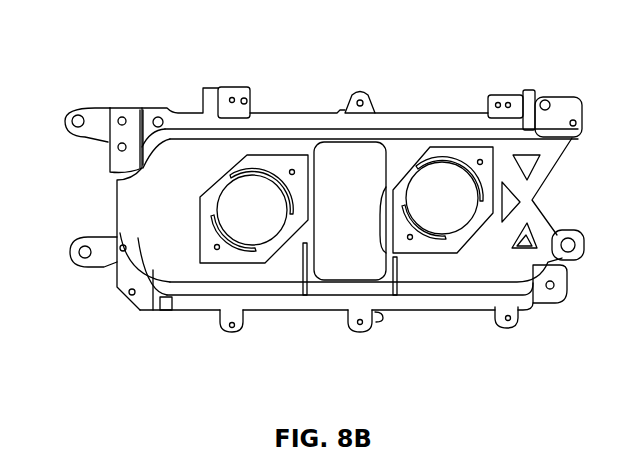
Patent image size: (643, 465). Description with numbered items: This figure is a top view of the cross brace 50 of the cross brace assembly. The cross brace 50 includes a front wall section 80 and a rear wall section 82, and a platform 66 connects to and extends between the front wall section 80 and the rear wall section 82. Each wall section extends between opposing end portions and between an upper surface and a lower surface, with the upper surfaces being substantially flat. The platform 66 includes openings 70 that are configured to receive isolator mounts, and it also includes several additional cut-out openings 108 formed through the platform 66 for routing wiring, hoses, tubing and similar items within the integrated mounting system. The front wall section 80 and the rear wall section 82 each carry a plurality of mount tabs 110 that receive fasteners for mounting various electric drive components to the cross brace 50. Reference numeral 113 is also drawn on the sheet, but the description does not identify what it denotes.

The cross brace 50 is at (60, 70).
The platform 66 is at (180, 187).
The openings 70 is at (240, 222).
The front wall section 80 is at (300, 312).
The rear wall section 82 is at (287, 113).
The cut-out openings 108 is at (345, 165).
The mount tabs 110 is at (231, 88).
The flange 113 is at (381, 110).